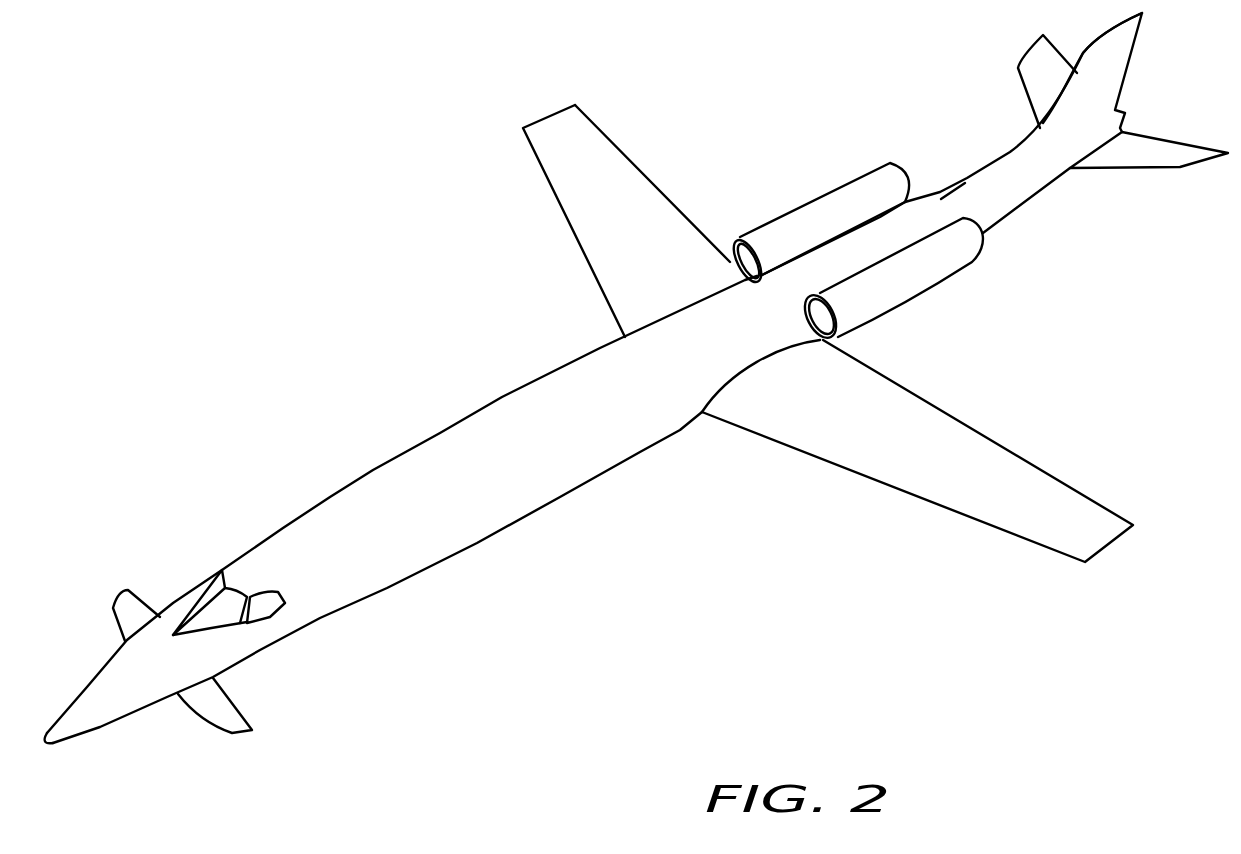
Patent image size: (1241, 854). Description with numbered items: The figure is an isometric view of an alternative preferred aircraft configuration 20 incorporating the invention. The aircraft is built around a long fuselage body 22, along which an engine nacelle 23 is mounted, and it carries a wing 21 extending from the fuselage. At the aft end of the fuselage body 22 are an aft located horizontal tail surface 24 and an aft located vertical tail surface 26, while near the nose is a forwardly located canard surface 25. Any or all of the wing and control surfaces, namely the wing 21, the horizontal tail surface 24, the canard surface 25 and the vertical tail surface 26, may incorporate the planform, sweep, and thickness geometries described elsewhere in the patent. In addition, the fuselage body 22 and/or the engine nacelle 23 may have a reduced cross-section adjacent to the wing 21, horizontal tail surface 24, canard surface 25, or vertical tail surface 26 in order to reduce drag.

The aircraft configuration 20 is at (480, 545).
The wing 21 is at (833, 466).
The fuselage body 22 is at (498, 397).
The engine nacelle 23 is at (918, 300).
The horizontal tail surface 24 is at (1170, 172).
The canard surface 25 is at (235, 699).
The vertical tail surface 26 is at (1142, 45).